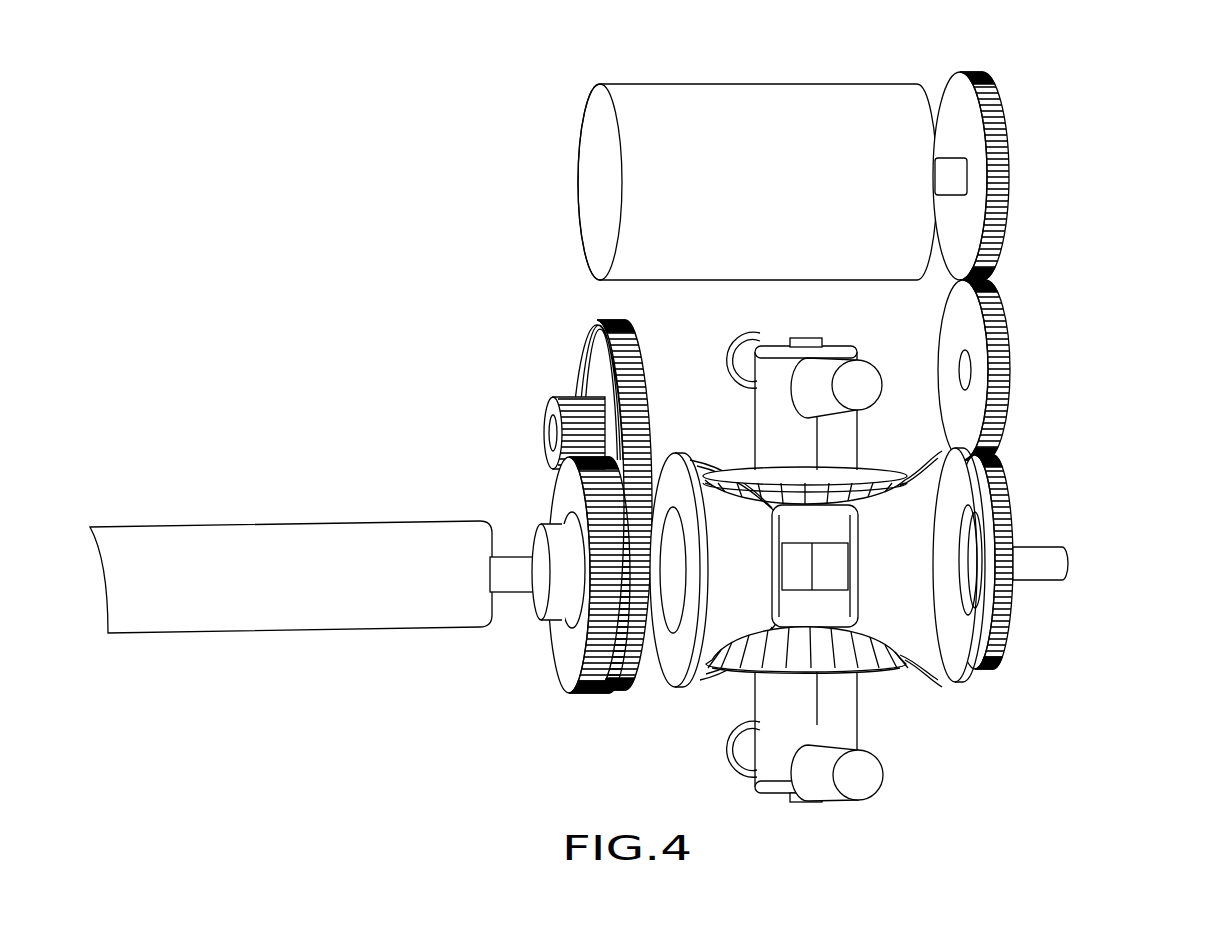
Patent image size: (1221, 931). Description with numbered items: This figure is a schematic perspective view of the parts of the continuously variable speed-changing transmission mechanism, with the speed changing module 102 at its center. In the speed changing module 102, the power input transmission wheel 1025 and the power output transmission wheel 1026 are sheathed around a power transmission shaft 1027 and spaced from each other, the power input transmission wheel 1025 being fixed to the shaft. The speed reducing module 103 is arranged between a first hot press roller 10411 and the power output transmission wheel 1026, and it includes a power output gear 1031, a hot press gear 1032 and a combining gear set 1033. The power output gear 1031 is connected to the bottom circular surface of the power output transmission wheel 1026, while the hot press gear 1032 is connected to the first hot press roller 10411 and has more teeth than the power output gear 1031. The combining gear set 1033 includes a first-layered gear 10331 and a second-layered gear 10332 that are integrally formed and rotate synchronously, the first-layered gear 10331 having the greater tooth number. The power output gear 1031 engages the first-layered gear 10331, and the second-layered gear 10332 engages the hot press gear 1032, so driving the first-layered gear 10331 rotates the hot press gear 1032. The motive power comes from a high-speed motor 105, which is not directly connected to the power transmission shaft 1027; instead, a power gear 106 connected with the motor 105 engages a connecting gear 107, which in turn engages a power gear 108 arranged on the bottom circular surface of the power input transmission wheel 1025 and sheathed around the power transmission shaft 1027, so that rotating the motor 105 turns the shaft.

The speed changing module 102 is at (863, 567).
The speed reducing module 103 is at (536, 526).
The motor 105 is at (716, 97).
The power gear 106 is at (1010, 152).
The connecting gear 107 is at (1010, 342).
The power gear 108 is at (1000, 500).
The power input transmission wheel 1025 is at (938, 630).
The power output transmission wheel 1026 is at (720, 657).
The power transmission shaft 1027 is at (1042, 558).
The power output gear 1031 is at (600, 557).
The hot press gear 1032 is at (565, 650).
The combining gear set 1033 is at (536, 482).
The first-layered gear 10331 is at (607, 325).
The second-layered gear 10332 is at (556, 392).
The first hot press roller 10411 is at (258, 535).